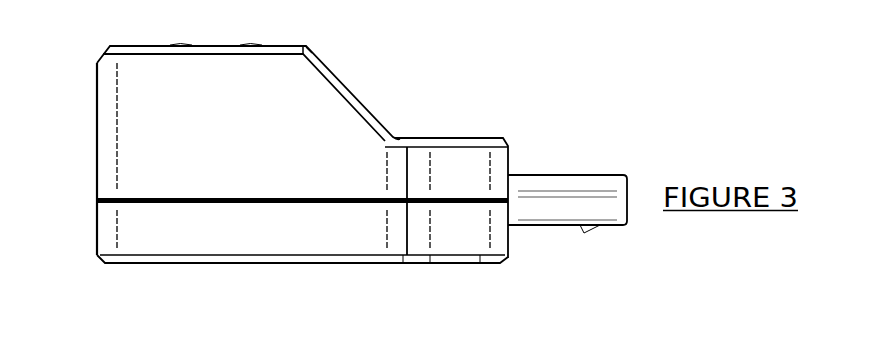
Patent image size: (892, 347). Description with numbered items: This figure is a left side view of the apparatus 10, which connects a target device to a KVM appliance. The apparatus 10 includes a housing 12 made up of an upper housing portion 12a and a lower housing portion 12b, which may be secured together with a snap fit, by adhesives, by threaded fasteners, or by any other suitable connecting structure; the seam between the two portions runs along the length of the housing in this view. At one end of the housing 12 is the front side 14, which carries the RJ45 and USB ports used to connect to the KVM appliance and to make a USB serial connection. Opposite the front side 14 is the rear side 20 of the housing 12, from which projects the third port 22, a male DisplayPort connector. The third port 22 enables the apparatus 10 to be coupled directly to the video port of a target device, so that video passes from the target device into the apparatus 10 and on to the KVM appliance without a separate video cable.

The apparatus 10 is at (408, 61).
The housing 12 is at (443, 134).
The upper housing portion 12a is at (132, 108).
The lower housing portion 12b is at (140, 237).
The front side 14 is at (97, 155).
The rear side 20 is at (517, 148).
The third port 22 is at (555, 205).